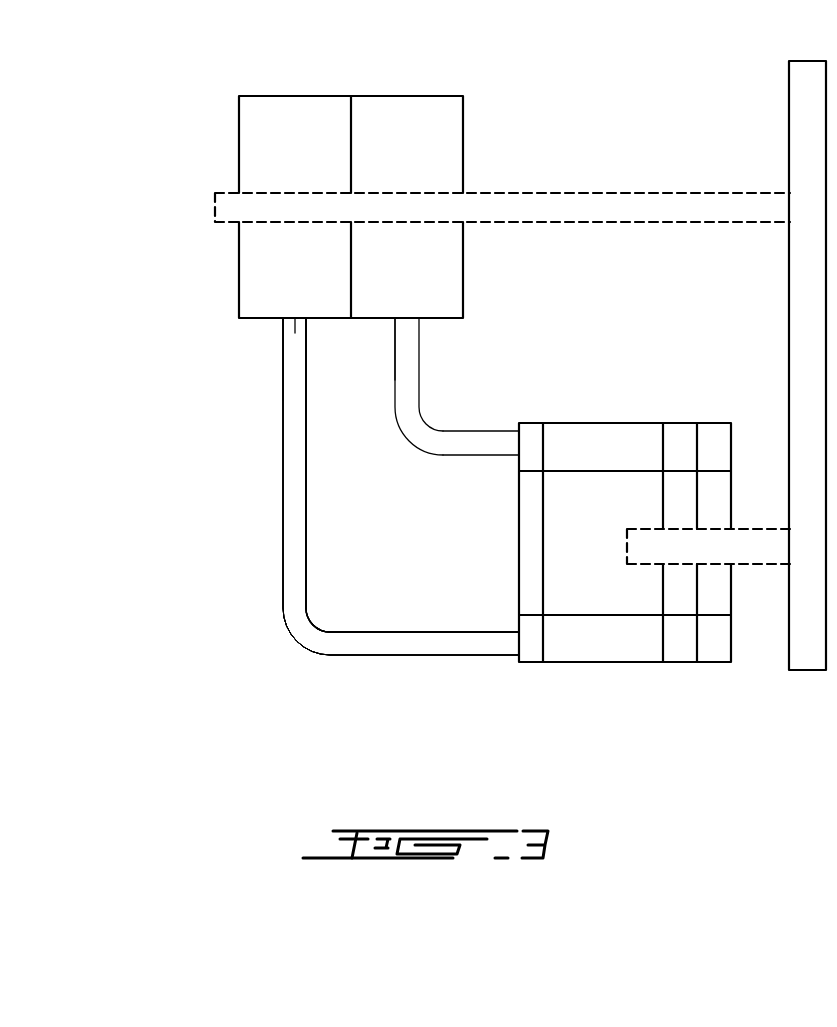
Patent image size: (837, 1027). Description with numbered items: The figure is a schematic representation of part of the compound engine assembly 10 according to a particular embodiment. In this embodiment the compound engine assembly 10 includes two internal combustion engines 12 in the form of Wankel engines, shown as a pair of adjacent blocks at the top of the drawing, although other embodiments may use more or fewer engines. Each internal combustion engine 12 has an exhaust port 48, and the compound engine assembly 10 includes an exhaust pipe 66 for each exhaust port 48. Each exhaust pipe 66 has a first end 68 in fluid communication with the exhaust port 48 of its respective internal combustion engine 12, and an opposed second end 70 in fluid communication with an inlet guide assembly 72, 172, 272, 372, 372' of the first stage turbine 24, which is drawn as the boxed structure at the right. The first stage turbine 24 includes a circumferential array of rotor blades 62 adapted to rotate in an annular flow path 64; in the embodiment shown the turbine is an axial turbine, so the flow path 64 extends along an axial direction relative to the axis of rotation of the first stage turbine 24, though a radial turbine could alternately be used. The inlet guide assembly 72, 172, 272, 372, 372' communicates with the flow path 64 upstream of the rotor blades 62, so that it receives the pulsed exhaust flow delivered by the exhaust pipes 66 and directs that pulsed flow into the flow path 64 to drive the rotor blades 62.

The compound engine assembly 10 is at (178, 128).
The internal combustion engine 12 is at (293, 96).
The first stage turbine 24 is at (663, 487).
The exhaust port 48 is at (295, 333).
The rotor blades 62 is at (679, 445).
The annular flow path 64 is at (615, 638).
The exhaust pipe 66 is at (283, 393).
The first end 68 is at (407, 330).
The second end 70 is at (502, 443).
The inlet guide assembly 72 is at (518, 572).
The inlet guide assembly 172 is at (401, 528).
The inlet guide assembly 272 is at (401, 528).
The inlet guide assembly 372 is at (401, 528).
The inlet guide assembly 372' is at (408, 528).